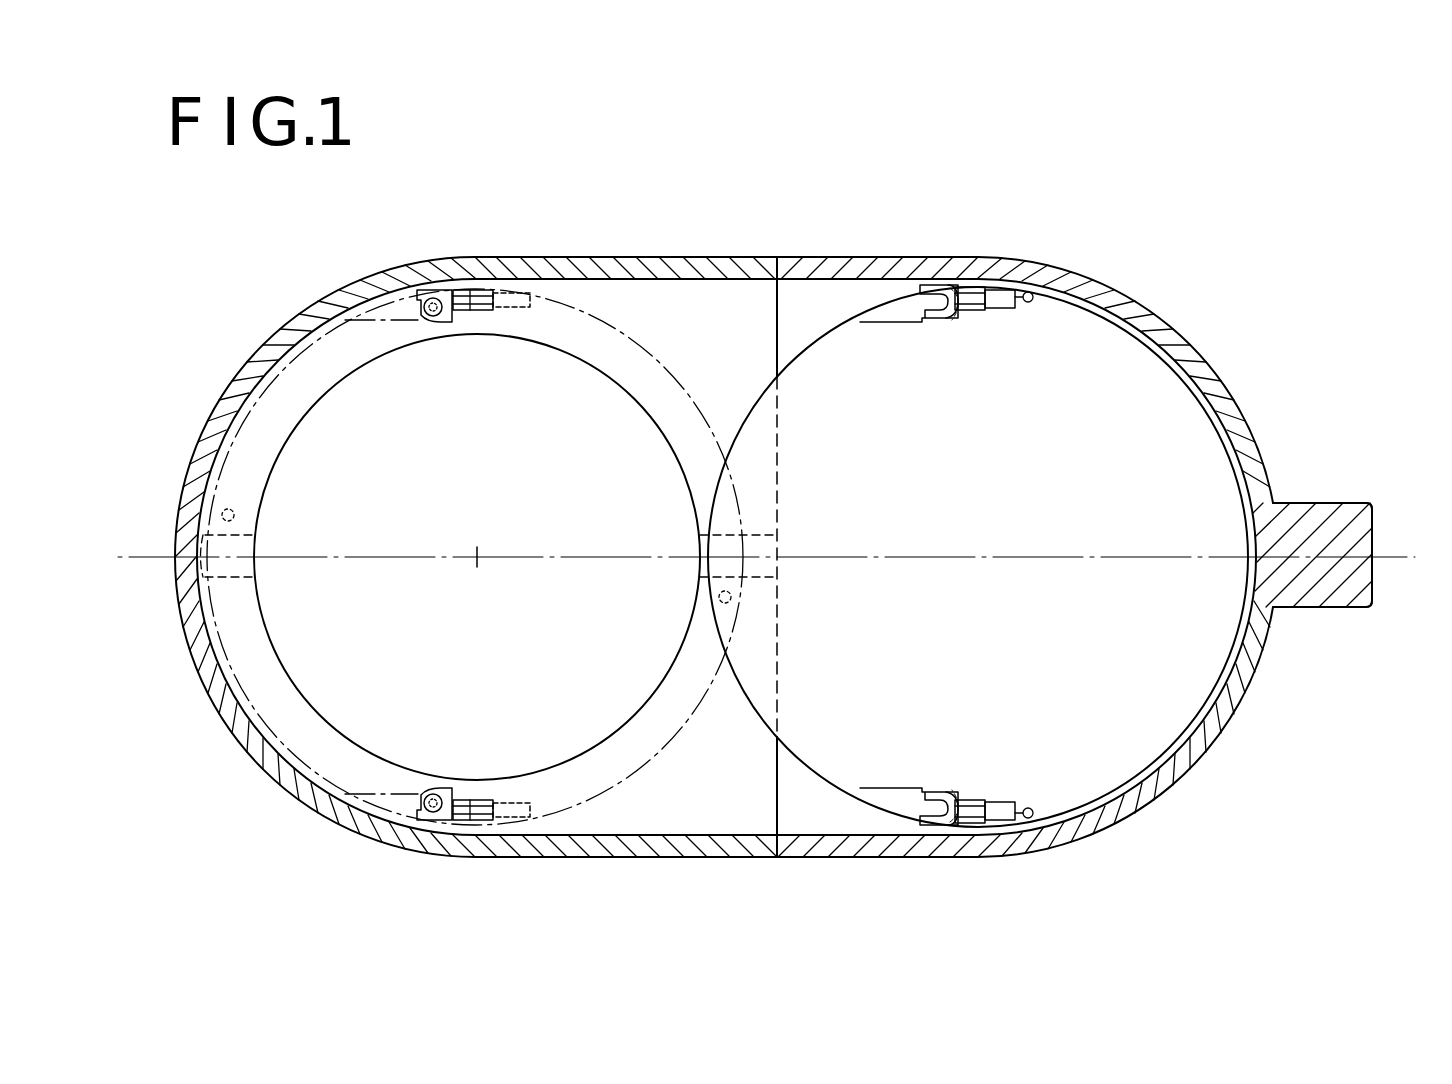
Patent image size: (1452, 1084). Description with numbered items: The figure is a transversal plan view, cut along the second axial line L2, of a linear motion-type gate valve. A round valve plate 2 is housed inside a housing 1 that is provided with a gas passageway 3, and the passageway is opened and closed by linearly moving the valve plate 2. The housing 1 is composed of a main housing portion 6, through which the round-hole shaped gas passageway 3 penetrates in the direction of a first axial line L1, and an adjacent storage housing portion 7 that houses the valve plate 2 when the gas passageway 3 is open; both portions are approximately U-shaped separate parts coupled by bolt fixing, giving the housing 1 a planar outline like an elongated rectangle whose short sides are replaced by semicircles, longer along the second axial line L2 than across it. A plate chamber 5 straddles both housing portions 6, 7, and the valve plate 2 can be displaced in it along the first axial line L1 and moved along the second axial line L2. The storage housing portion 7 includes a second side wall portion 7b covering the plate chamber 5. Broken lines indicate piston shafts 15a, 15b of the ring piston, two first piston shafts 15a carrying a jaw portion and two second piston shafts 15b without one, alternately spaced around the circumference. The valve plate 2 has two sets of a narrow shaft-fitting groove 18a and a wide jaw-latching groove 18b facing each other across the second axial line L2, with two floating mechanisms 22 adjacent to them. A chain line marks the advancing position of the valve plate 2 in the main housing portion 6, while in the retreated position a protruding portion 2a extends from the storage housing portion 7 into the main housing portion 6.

The housing 1 is at (538, 182).
The valve plate 2 is at (1006, 475).
The protruding portion 2a is at (760, 415).
The gas passageway 3 is at (490, 475).
The plate chamber 5 is at (690, 826).
The main housing portion 6 is at (257, 297).
The storage housing portion 7 is at (1218, 309).
The second side wall portion 7b is at (1337, 515).
The first piston shaft 15a is at (434, 298).
The second piston shaft 15b is at (222, 511).
The shaft-fitting groove 18a is at (905, 300).
The jaw-latching groove 18b is at (950, 286).
The floating mechanism 22 is at (985, 287).
The first axial line L1 is at (477, 557).
The second axial line L2 is at (783, 558).